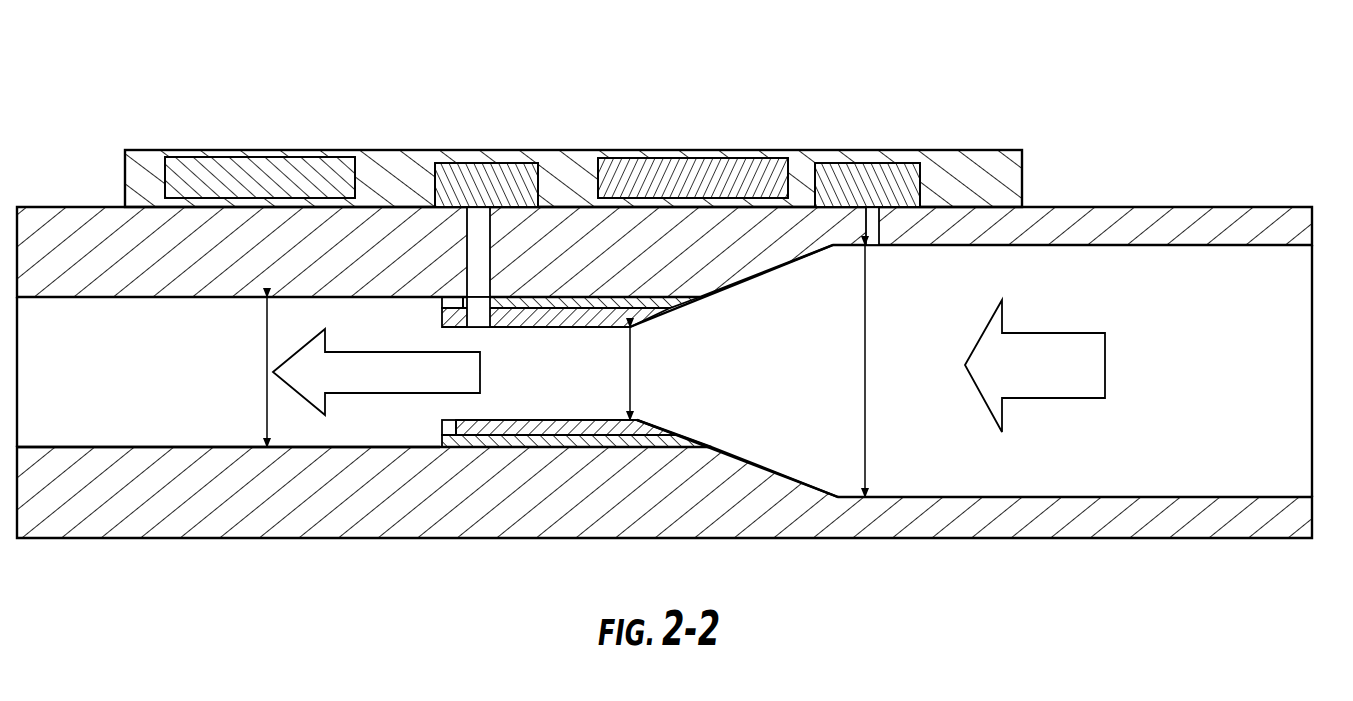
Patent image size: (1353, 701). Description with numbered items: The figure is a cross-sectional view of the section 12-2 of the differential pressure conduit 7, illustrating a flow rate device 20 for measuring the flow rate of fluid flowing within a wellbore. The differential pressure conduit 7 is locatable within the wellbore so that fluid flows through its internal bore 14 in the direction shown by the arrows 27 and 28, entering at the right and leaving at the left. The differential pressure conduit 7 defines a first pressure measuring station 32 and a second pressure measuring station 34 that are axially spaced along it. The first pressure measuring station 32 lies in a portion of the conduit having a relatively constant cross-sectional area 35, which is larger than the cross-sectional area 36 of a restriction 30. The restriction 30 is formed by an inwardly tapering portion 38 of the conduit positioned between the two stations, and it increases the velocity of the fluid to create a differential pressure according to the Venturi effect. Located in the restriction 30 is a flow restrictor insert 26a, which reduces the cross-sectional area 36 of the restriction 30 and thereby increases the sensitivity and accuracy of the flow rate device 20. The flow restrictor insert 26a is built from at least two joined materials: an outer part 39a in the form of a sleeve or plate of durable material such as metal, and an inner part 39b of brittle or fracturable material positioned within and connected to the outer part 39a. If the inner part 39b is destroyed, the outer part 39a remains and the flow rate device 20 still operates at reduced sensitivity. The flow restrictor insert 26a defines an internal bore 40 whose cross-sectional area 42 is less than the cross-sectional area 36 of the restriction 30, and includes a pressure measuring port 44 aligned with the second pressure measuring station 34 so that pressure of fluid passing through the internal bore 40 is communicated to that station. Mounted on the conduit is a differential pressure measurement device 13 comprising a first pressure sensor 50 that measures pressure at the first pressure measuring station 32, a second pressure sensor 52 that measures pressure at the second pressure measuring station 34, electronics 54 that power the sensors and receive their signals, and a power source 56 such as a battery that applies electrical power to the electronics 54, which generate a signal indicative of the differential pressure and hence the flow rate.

The differential pressure conduit 7 is at (685, 360).
The section of the differential pressure conduit 12-2 is at (1078, 207).
The differential pressure measurement device 13 is at (573, 133).
The internal bore 14 is at (1272, 498).
The flow rate device 20 is at (685, 334).
The flow restrictor insert 26a is at (682, 437).
The arrow 27 is at (1074, 333).
The arrow 28 is at (418, 350).
The restriction 30 is at (413, 447).
The first pressure measuring station 32 is at (878, 232).
The second pressure measuring station 34 is at (478, 240).
The cross-sectional area 35 is at (883, 371).
The cross-sectional area of the restriction 36 is at (265, 367).
The inwardly tapering portion 38 is at (775, 477).
The outer part 39a is at (698, 301).
The inner part 39b is at (656, 320).
The internal bore 40 is at (517, 408).
The cross-sectional area 42 is at (633, 373).
The pressure measuring port 44 is at (480, 312).
The first pressure sensor 50 is at (885, 175).
The second pressure sensor 52 is at (470, 170).
The electronics 54 is at (677, 170).
The power source 56 is at (258, 165).